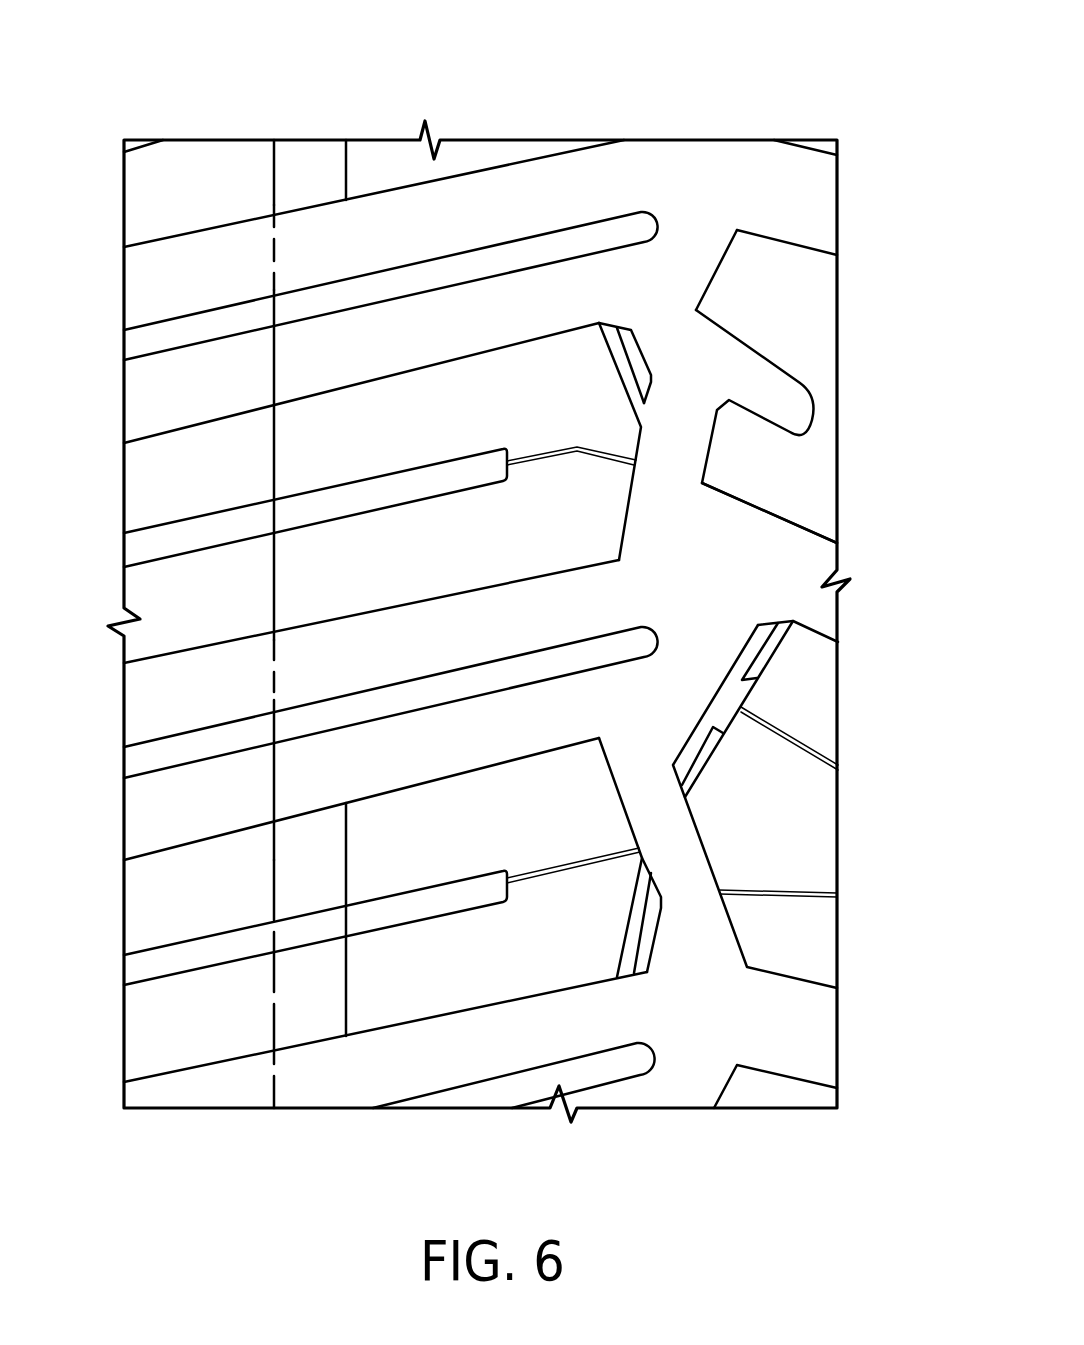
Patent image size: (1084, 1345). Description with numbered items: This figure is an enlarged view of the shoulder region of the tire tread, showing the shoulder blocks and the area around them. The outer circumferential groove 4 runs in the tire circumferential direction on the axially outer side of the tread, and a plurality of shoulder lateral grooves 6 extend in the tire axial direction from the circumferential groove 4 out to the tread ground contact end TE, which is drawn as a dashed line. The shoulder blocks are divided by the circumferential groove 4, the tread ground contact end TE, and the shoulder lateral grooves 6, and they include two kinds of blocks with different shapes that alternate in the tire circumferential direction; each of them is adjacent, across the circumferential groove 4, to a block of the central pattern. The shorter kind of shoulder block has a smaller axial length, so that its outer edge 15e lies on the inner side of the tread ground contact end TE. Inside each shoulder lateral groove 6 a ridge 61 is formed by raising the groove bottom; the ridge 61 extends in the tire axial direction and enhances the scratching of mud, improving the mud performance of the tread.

The circumferential groove 4 is at (701, 367).
The tread ground contact end TE is at (273, 203).
The shoulder lateral groove 6 is at (487, 218).
The ridge 61 is at (371, 290).
The outer edge 15e is at (342, 988).